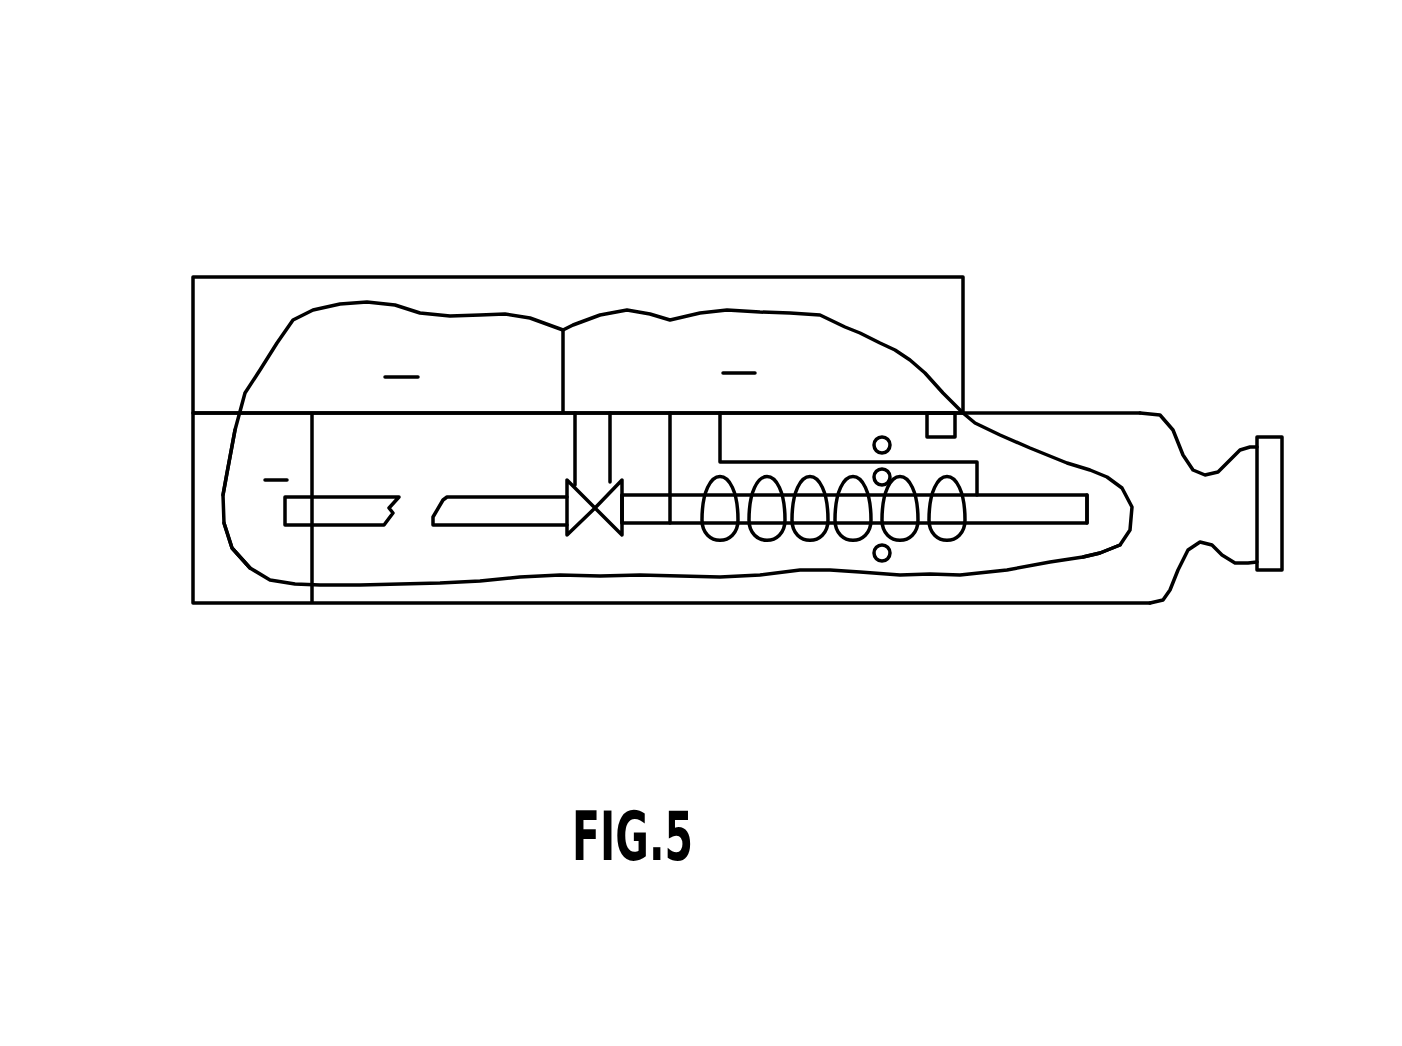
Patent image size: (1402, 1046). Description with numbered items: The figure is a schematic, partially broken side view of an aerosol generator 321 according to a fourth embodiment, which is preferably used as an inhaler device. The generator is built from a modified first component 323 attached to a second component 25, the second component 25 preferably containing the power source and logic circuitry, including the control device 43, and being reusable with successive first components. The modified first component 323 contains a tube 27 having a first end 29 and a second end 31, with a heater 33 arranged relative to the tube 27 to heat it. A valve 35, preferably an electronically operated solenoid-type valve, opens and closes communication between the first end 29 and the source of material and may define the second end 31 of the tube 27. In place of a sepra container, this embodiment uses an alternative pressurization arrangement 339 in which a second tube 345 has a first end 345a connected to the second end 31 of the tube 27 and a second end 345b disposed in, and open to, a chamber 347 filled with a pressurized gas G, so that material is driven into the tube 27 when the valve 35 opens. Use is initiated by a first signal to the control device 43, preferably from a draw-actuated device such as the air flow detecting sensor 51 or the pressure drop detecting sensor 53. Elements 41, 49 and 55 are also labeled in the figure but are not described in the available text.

The aerosol generator 321 is at (737, 200).
The second component 25 is at (903, 277).
The modified first component 323 is at (1112, 410).
The air flow detecting sensor 51 is at (968, 424).
The chamber 347 is at (245, 468).
The second end of second tube 345b is at (285, 512).
The first end of second tube 345a is at (567, 508).
The second tube 345 is at (465, 537).
The pressurization arrangement 339 is at (262, 565).
The valve 35 is at (614, 535).
The second end of tube 31 is at (623, 520).
The heater 33 is at (838, 545).
The spacers 55 is at (886, 562).
The tube 27 is at (1027, 510).
The first end of tube 29 is at (1087, 516).
The envelope dome 49 is at (1137, 560).
The pressure drop detecting sensor 53 is at (1282, 517).
The control device 43 is at (401, 357).
The region 41 is at (739, 355).
The pressurized gas G is at (276, 463).